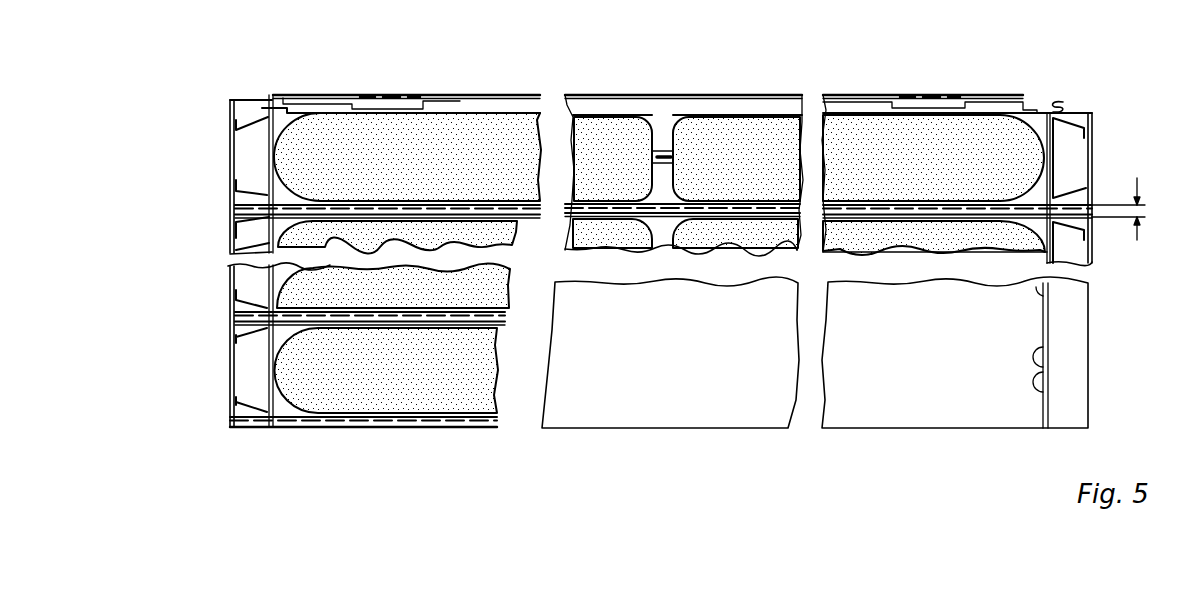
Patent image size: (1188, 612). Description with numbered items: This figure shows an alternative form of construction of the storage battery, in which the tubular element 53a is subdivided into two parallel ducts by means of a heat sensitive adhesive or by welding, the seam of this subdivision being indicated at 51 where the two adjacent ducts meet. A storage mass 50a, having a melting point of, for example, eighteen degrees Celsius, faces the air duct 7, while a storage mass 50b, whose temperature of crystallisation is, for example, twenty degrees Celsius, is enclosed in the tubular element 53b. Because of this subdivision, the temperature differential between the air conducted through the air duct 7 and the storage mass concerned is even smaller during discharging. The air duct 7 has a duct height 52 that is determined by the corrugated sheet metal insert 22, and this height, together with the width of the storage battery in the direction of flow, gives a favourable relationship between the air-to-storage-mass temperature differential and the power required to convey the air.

The air duct 7 is at (202, 284).
The corrugated sheet metal insert 22 is at (1083, 193).
The storage mass 50a is at (612, 180).
The storage mass 50b is at (718, 178).
The connecting web 51 is at (663, 150).
The duct height 52 is at (1130, 213).
The tubular element 53a is at (600, 115).
The tubular element 53b is at (770, 115).